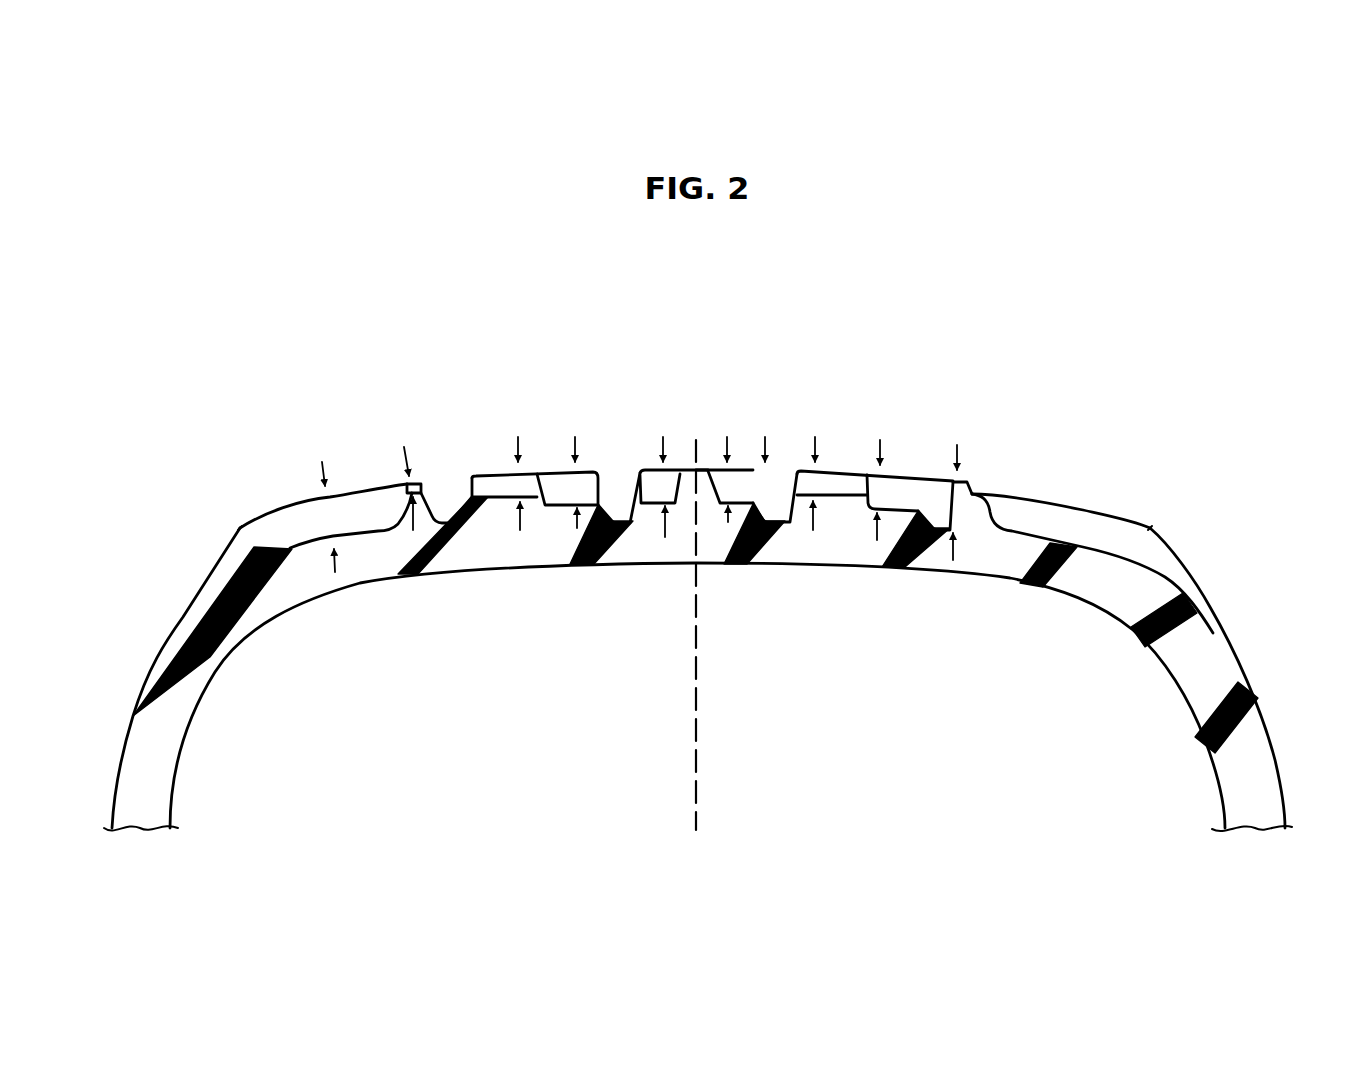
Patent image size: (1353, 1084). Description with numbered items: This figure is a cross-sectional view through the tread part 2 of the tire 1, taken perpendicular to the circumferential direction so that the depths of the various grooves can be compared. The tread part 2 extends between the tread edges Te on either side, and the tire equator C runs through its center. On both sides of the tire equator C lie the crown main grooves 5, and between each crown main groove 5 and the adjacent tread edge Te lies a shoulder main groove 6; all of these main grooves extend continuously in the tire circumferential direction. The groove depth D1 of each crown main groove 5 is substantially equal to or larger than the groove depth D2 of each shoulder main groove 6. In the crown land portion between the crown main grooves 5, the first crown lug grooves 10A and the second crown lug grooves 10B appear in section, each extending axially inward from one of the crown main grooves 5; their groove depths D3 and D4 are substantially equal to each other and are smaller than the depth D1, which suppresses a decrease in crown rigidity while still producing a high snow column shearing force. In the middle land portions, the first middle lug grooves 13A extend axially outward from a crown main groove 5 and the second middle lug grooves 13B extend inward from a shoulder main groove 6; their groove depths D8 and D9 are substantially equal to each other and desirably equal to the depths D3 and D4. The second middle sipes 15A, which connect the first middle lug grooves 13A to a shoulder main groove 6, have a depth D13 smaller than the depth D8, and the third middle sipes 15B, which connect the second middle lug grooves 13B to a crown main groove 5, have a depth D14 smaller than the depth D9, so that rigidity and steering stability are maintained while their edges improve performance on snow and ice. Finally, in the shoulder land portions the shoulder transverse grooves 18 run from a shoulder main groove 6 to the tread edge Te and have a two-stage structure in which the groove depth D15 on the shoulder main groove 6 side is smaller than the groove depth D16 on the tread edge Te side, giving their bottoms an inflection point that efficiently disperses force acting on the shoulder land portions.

The tire 1 is at (1229, 295).
The tread part 2 is at (1120, 388).
The crown main groove 5 is at (615, 497).
The shoulder main groove 6 is at (441, 500).
The first crown lug groove 10A is at (638, 489).
The second crown lug groove 10B is at (750, 477).
The first middle lug groove 13A is at (560, 488).
The second middle lug groove 13B is at (890, 500).
The second middle sipe 15A is at (480, 483).
The third middle sipe 15B is at (830, 482).
The shoulder transverse groove 18 is at (341, 572).
The tread edge Te is at (240, 528).
The tire equator C is at (692, 616).
The groove depth of crown main groove D1 is at (783, 480).
The groove depth of shoulder main groove D2 is at (957, 487).
The groove depth of first crown lug groove D3 is at (660, 500).
The groove depth of second crown lug groove D4 is at (723, 487).
The groove depth of first middle lug groove D8 is at (577, 510).
The groove depth of second middle lug groove D9 is at (898, 505).
The depth of second middle sipe D13 is at (518, 483).
The depth of third middle sipe D14 is at (833, 498).
The groove depth of shoulder transverse groove on shoulder main groove side D15 is at (405, 508).
The groove depth of shoulder transverse groove on tread edge side D16 is at (335, 572).